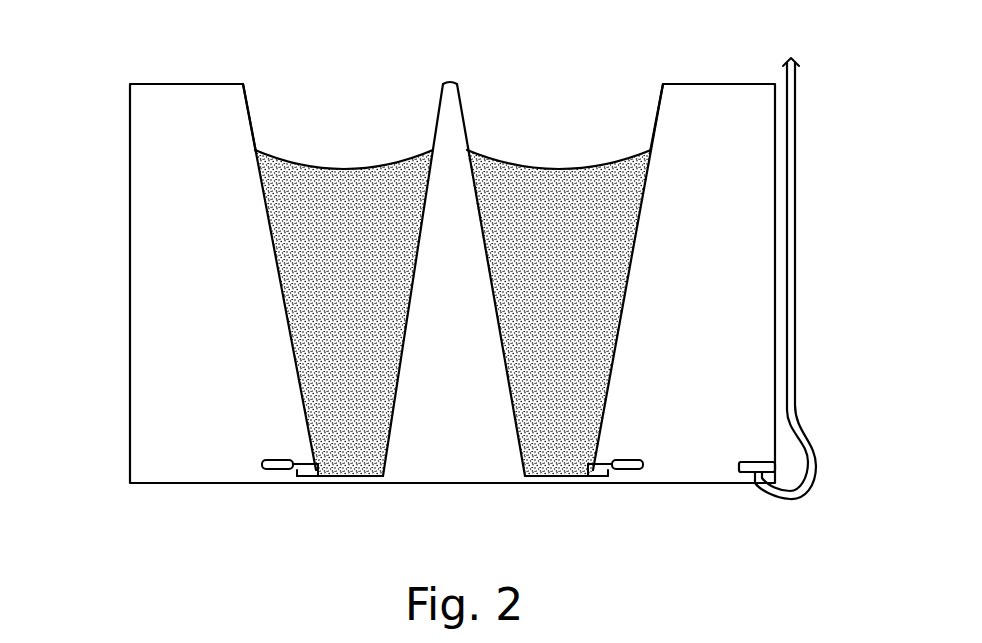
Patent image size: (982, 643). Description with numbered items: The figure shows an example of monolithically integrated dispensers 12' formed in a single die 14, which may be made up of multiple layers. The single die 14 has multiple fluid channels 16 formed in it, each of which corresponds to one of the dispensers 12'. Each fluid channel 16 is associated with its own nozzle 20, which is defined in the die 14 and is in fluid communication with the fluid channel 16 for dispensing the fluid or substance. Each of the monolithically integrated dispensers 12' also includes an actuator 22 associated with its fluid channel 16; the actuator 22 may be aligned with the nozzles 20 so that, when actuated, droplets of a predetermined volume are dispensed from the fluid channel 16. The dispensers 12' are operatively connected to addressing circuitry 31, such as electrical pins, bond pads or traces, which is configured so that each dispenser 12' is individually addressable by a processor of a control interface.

The die 14 is at (156, 283).
The monolithically integrated dispensers 12' is at (453, 241).
The fluid channel 16 is at (248, 116).
The actuator 22 is at (283, 460).
The nozzle 20 is at (290, 484).
The addressing circuitry 31 is at (797, 243).